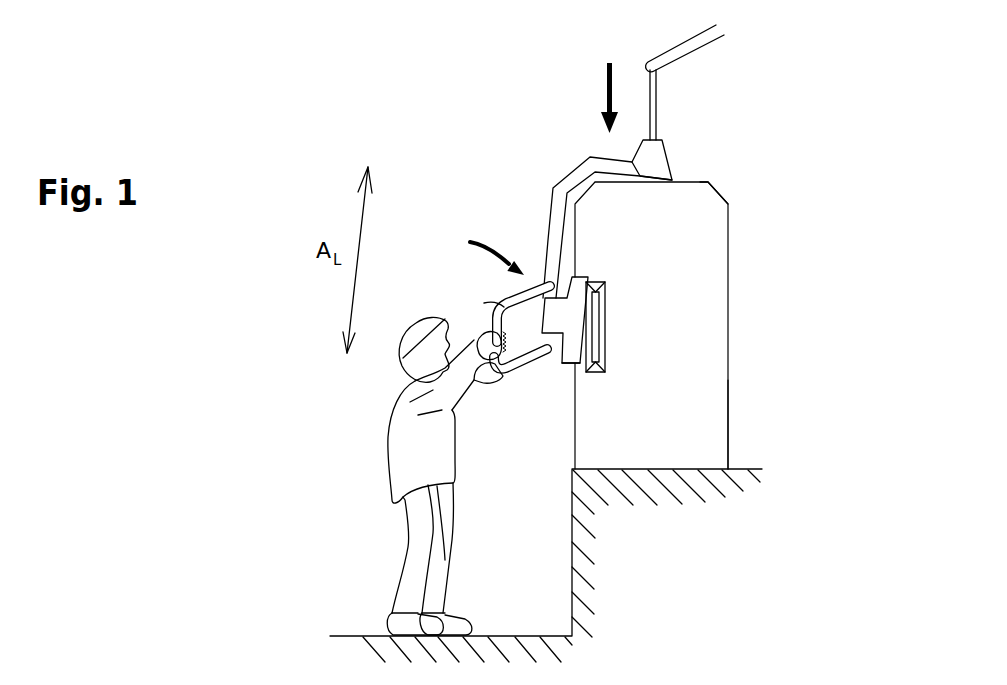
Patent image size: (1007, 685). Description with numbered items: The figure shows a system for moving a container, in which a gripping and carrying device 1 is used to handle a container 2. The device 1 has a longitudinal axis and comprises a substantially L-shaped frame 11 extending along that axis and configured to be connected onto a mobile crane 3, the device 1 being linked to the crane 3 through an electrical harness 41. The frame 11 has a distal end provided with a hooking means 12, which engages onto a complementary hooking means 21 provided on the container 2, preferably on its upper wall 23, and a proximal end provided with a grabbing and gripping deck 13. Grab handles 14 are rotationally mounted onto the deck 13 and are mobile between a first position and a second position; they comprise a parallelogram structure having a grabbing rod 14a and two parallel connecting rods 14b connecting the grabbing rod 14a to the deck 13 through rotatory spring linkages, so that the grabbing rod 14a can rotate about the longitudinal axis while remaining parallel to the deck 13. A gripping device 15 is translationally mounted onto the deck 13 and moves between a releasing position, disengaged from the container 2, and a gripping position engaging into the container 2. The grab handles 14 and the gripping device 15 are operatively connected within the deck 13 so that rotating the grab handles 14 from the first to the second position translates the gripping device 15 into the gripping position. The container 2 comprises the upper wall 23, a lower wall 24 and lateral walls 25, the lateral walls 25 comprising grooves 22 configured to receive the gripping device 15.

The gripping and carrying device 1 is at (530, 91).
The container 2 is at (778, 318).
The mobile crane 3 is at (657, 31).
The frame 11 is at (567, 173).
The hooking means 12 is at (665, 180).
The grabbing and gripping deck 13 is at (522, 305).
The grab handles 14 is at (473, 346).
The grabbing rod 14a is at (496, 317).
The connecting rods 14b is at (500, 302).
The gripping device 15 is at (567, 363).
The complementary hooking means 21 is at (640, 180).
The grooves 22 is at (605, 332).
The upper wall 23 is at (700, 167).
The lower wall 24 is at (688, 472).
The lateral walls 25 is at (682, 417).
The electrical harness 41 is at (657, 115).